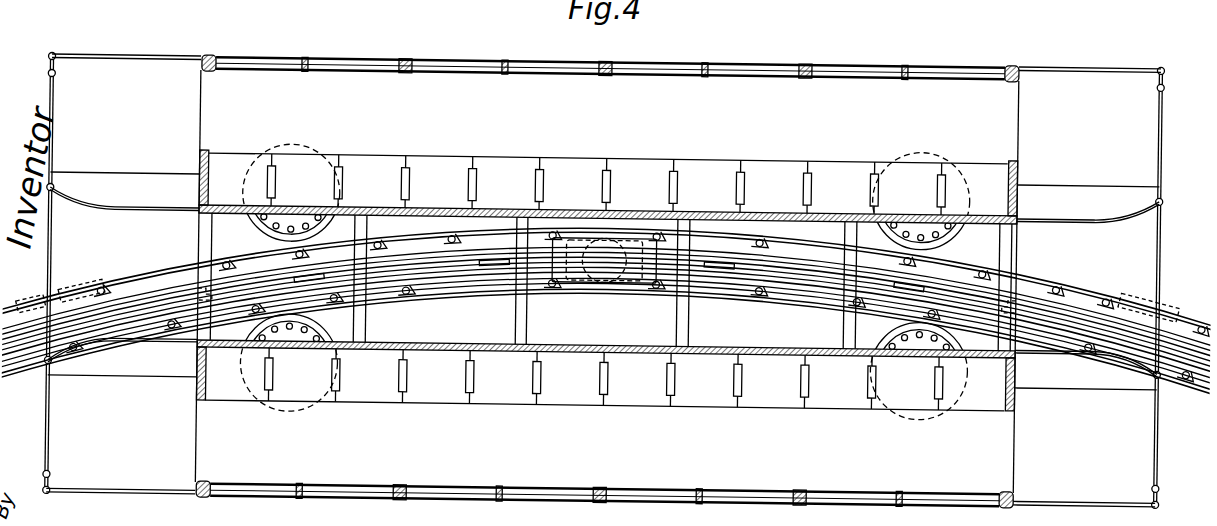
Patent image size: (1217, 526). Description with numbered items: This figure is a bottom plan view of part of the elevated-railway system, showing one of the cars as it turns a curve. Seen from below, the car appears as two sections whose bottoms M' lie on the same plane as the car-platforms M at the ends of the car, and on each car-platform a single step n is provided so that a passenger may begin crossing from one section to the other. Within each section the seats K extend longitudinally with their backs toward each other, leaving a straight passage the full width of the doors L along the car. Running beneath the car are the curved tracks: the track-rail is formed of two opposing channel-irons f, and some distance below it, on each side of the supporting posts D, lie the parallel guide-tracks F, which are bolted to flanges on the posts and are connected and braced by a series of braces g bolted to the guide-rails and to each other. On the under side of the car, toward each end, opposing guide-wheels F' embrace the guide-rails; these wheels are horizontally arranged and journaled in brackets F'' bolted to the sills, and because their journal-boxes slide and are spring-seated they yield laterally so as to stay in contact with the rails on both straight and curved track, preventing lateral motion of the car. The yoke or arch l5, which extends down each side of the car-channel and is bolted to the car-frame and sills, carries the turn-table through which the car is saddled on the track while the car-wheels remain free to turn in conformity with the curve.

The car-platform M is at (604, 280).
The bottom of car-section M' is at (607, 282).
The single step n is at (603, 282).
The door L is at (604, 281).
The seat K is at (604, 282).
The guide-track F is at (608, 363).
The guide-wheel F' is at (588, 281).
The bracket F'' is at (594, 281).
The post D is at (82, 288).
The brace g is at (508, 282).
The channel-iron f is at (470, 288).
The yoke or arch l5 is at (372, 312).